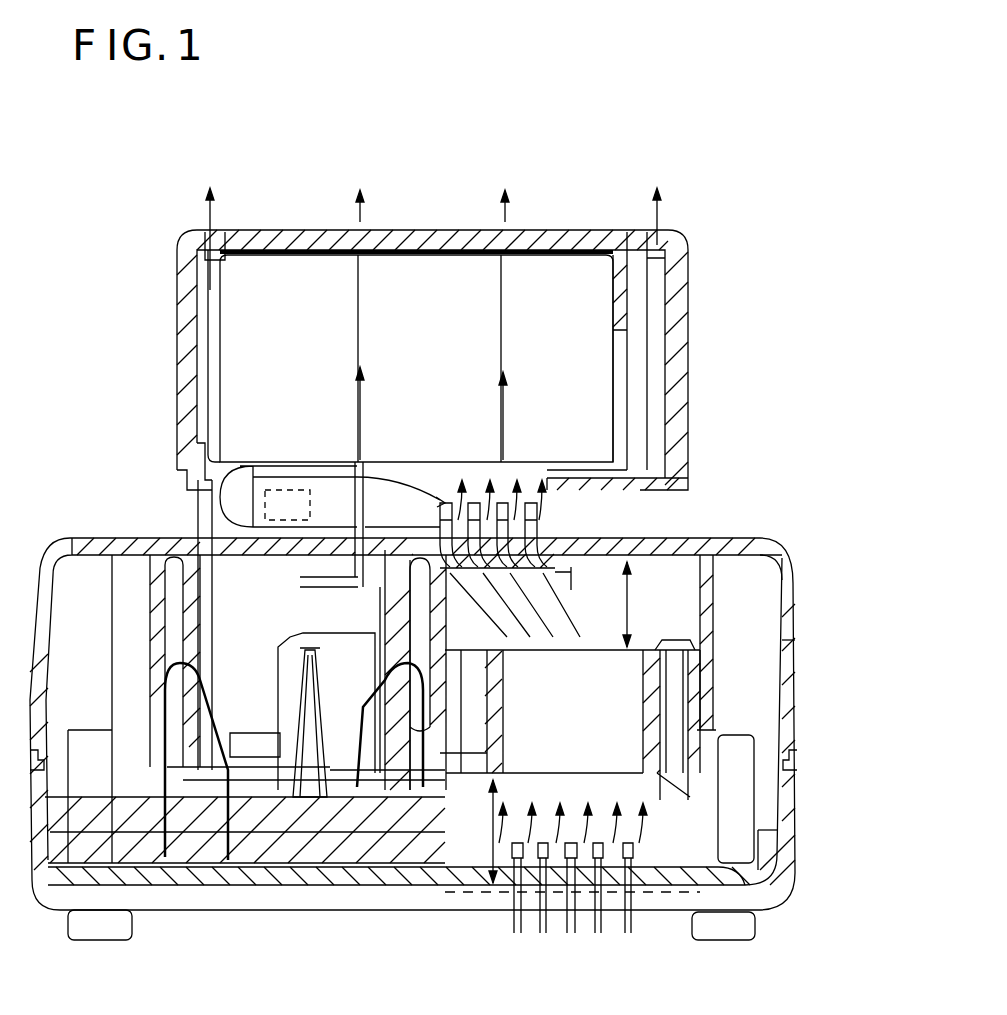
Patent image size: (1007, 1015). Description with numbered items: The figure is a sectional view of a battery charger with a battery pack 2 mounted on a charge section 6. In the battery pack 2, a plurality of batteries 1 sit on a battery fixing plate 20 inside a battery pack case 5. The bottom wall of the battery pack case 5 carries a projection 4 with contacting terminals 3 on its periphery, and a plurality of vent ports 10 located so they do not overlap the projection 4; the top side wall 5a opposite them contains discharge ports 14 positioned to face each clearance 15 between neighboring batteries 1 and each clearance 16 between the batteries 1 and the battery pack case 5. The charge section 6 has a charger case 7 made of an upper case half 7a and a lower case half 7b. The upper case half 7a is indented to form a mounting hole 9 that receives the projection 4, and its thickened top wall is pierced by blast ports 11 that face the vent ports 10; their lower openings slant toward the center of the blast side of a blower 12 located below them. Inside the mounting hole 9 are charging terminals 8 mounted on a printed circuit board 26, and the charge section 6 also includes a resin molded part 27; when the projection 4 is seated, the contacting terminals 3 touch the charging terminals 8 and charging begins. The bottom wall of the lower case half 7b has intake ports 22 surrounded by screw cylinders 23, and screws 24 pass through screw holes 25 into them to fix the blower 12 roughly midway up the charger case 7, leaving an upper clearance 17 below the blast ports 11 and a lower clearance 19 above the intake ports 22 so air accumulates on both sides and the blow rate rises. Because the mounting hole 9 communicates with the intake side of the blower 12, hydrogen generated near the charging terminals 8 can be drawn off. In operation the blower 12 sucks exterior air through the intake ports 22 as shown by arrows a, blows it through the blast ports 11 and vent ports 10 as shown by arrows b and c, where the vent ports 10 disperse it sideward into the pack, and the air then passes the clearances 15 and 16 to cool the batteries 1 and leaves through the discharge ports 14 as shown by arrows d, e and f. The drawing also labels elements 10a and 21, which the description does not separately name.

The batteries 1 is at (557, 280).
The battery pack 2 is at (688, 341).
The contacting terminals 3 is at (250, 618).
The projection 4 is at (265, 572).
The battery pack case 5 is at (688, 390).
The top side wall 5a is at (535, 237).
The charge section 6 is at (803, 791).
The charger case 7 is at (803, 727).
The upper case half 7a is at (787, 667).
The lower case half 7b is at (790, 813).
The charging terminals 8 is at (358, 763).
The mounting hole 9 is at (372, 668).
The vent ports 10 is at (563, 503).
The nozzle outlet 10a is at (438, 497).
The blast ports 11 is at (526, 580).
The blower 12 is at (620, 683).
The discharge ports 14 is at (665, 240).
The clearance between batteries 15 is at (503, 330).
The clearance between batteries and case 16 is at (203, 417).
The upper clearance 17 is at (633, 590).
The lower clearance 19 is at (497, 790).
The battery fixing plate 20 is at (395, 465).
The motor support 21 is at (697, 670).
The intake ports 22 is at (629, 870).
The screw cylinders 23 is at (690, 817).
The screws 24 is at (677, 637).
The screw holes 25 is at (712, 720).
The printed circuit board 26 is at (250, 845).
The resin molded part 27 is at (293, 857).
The arrows a is at (641, 806).
The arrows b is at (540, 613).
The arrows c is at (533, 500).
The arrows d is at (503, 372).
The arrows e is at (655, 228).
The arrows f is at (505, 213).